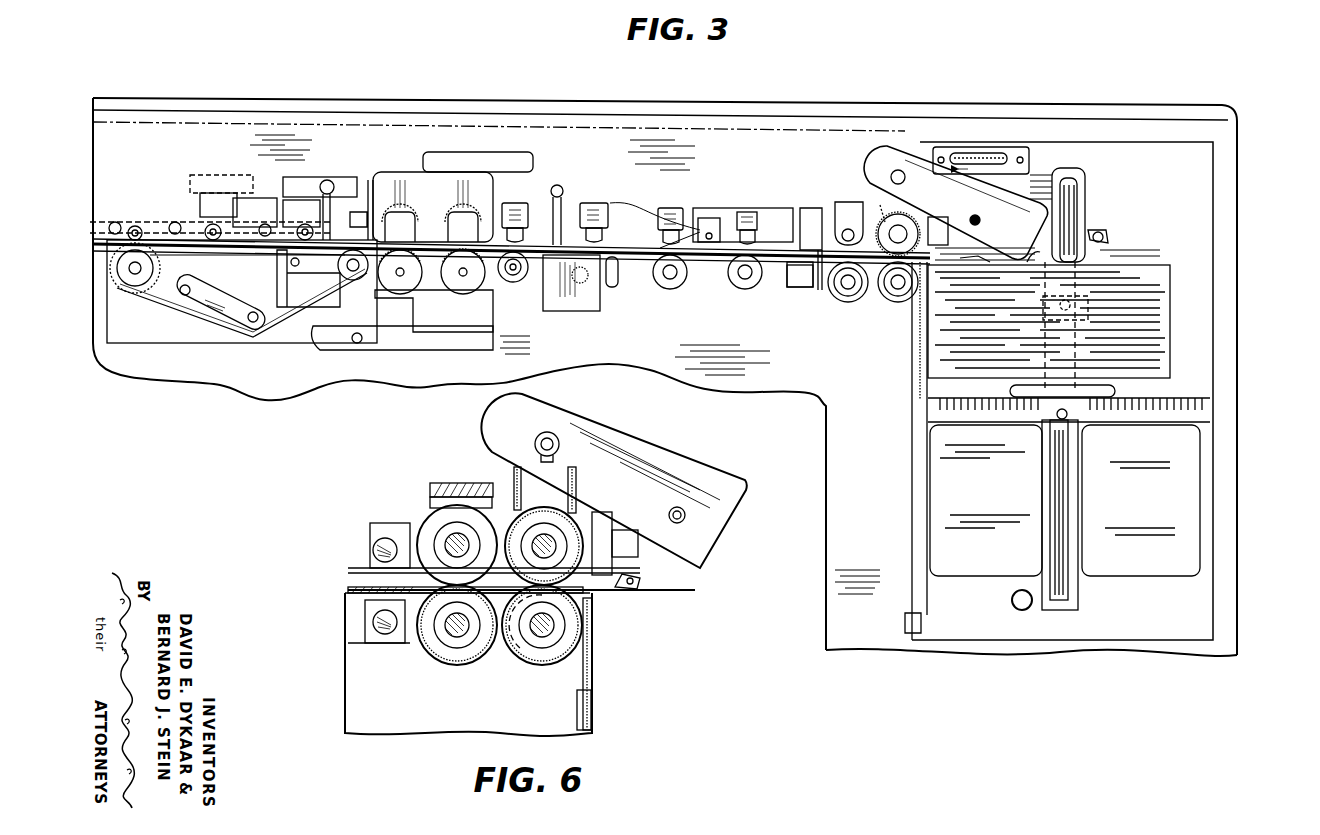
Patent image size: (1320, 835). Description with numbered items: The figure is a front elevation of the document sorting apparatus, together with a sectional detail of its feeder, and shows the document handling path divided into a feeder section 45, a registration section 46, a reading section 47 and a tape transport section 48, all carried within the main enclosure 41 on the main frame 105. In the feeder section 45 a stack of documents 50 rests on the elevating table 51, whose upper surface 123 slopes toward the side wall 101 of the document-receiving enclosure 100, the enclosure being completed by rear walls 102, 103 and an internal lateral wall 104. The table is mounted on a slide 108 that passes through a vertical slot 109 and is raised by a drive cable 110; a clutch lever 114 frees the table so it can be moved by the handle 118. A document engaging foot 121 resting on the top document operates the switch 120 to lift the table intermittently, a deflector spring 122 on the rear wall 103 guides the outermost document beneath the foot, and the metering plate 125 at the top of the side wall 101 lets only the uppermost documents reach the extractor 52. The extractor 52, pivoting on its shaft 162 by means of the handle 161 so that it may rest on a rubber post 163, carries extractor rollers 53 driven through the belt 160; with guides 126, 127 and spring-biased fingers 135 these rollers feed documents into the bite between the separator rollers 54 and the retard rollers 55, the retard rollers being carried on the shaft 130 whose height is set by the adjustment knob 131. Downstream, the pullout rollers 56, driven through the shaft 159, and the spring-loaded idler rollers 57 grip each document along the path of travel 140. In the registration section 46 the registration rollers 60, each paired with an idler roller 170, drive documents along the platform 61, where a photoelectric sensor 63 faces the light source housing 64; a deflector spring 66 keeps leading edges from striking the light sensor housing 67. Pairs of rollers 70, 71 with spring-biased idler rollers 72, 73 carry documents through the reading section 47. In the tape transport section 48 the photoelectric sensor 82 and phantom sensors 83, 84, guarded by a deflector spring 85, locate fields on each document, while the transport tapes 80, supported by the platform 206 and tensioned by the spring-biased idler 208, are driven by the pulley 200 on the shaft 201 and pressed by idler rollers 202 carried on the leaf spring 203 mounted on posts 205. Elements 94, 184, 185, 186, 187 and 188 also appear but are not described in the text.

In FIG. 3, the main enclosure 41 is at (1242, 247).
In FIG. 3, the feeder section 45 is at (838, 100).
In FIG. 3, the registration section 46 is at (495, 99).
In FIG. 3, the reading section 47 is at (373, 98).
In FIG. 3, the tape transport section 48 is at (112, 98).
In FIG. 3, the stack of documents 50 is at (1152, 308).
In FIG. 3, the elevating table 51 is at (953, 398).
In FIG. 3, the extractor 52 is at (1019, 200).
In FIG. 6, the extractor 52 is at (666, 446).
In FIG. 3, the extractor rollers 53 is at (1035, 256).
In FIG. 3, the separator rollers 54 is at (900, 220).
In FIG. 6, the separator rollers 54 is at (551, 510).
In FIG. 3, the retard rollers 55 is at (888, 302).
In FIG. 6, the retard rollers 55 is at (530, 672).
In FIG. 3, the pullout rollers 56 is at (835, 304).
In FIG. 6, the pullout rollers 56 is at (436, 663).
In FIG. 3, the idler rollers 57 is at (826, 236).
In FIG. 6, the idler rollers 57 is at (424, 521).
In FIG. 3, the registration rollers 60 is at (508, 290).
In FIG. 3, the platform 61 is at (606, 288).
In FIG. 6, the platform 61 is at (377, 597).
In FIG. 3, the photoelectric sensor 63 is at (570, 190).
In FIG. 3, the housing 64 is at (575, 313).
In FIG. 3, the deflector spring 66 is at (690, 238).
In FIG. 3, the light sensor housing 67 is at (603, 252).
In FIG. 3, the rollers 70 is at (500, 280).
In FIG. 3, the rollers 71 is at (400, 284).
In FIG. 3, the idler rollers 72 is at (464, 226).
In FIG. 3, the idler rollers 73 is at (398, 229).
In FIG. 3, the transport tapes 80 is at (313, 335).
In FIG. 3, the photoelectric sensor 82 is at (328, 182).
In FIG. 3, the photoelectric sensor 83 is at (270, 204).
In FIG. 3, the photoelectric sensor 84 is at (230, 176).
In FIG. 3, the deflector spring 85 is at (358, 212).
In FIG. 3, the pulley 94 is at (113, 218).
In FIG. 3, the document-receiving enclosure 100 is at (946, 514).
In FIG. 3, the side wall 101 is at (937, 468).
In FIG. 3, the rear wall 102 is at (995, 577).
In FIG. 3, the rear wall 103 is at (1145, 583).
In FIG. 3, the internal lateral wall 104 is at (1197, 545).
In FIG. 3, the main frame 105 is at (721, 140).
In FIG. 3, the slide 108 is at (1086, 320).
In FIG. 3, the vertical slot 109 is at (1064, 581).
In FIG. 3, the drive cable 110 is at (1070, 206).
In FIG. 3, the clutch lever 114 is at (1013, 610).
In FIG. 3, the handle 118 is at (1114, 392).
In FIG. 3, the switch 120 is at (921, 233).
In FIG. 6, the switch 120 is at (603, 535).
In FIG. 3, the document engaging foot 121 is at (970, 260).
In FIG. 6, the document engaging foot 121 is at (638, 581).
In FIG. 3, the deflector spring 122 is at (1102, 236).
In FIG. 6, the deflector spring 122 is at (671, 593).
In FIG. 3, the upper surface 123 is at (1192, 373).
In FIG. 3, the metering plate 125 is at (923, 322).
In FIG. 6, the metering plate 125 is at (594, 600).
In FIG. 3, the guide 126 is at (811, 222).
In FIG. 6, the guide 126 is at (415, 538).
In FIG. 3, the guide 127 is at (865, 302).
In FIG. 6, the guide 127 is at (506, 657).
In FIG. 3, the shaft 130 is at (874, 324).
In FIG. 3, the adjustment knob 131 is at (998, 158).
In FIG. 6, the spring-biased fingers 135 is at (548, 668).
In FIG. 6, the path of travel 140 is at (370, 580).
In FIG. 3, the shaft 159 is at (832, 294).
In FIG. 3, the belt 160 is at (884, 205).
In FIG. 6, the belt 160 is at (516, 478).
In FIG. 3, the handle 161 is at (981, 221).
In FIG. 6, the handle 161 is at (686, 518).
In FIG. 3, the shaft 162 is at (902, 169).
In FIG. 6, the shaft 162 is at (545, 436).
In FIG. 3, the rubber post 163 is at (868, 207).
In FIG. 6, the rubber post 163 is at (487, 481).
In FIG. 3, the idler roller 170 is at (560, 188).
In FIG. 3, the arm 184 is at (454, 148).
In FIG. 3, the rod 185 is at (537, 197).
In FIG. 3, the roller 186 is at (456, 283).
In FIG. 3, the housing 187 is at (383, 222).
In FIG. 3, the bracket 188 is at (396, 258).
In FIG. 3, the pulley 200 is at (165, 298).
In FIG. 3, the shaft 201 is at (133, 288).
In FIG. 3, the idler rollers 202 is at (168, 258).
In FIG. 3, the leaf spring 203 is at (240, 258).
In FIG. 3, the posts 205 is at (172, 223).
In FIG. 3, the platform 206 is at (313, 258).
In FIG. 3, the idler 208 is at (217, 307).